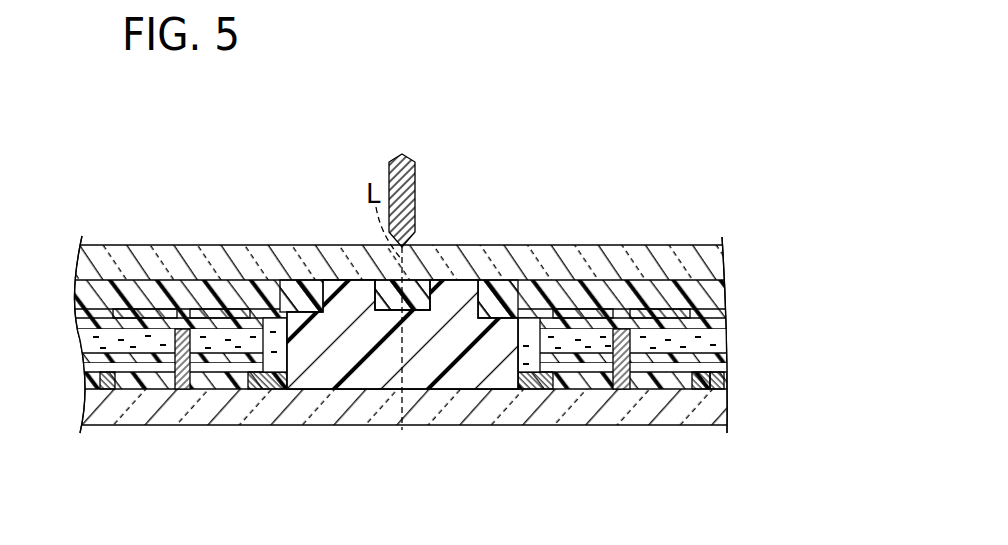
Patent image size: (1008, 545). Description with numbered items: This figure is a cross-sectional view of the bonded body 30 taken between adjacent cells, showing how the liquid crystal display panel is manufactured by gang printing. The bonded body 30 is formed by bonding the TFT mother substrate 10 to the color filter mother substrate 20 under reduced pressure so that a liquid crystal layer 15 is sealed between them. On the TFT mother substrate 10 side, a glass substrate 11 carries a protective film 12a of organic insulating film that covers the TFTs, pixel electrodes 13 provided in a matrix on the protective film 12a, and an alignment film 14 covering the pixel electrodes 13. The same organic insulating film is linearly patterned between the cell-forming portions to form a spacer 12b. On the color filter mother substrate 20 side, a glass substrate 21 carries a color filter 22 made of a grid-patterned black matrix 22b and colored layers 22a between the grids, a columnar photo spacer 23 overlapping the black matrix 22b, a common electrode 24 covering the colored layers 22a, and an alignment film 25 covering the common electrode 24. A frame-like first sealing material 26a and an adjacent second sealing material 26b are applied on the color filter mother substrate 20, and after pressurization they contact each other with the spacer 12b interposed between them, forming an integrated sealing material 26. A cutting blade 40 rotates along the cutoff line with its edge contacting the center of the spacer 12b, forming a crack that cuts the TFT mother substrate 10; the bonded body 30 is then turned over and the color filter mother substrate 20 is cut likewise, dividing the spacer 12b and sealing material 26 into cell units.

The bonded body 30 is at (108, 207).
The cutting blade 40 is at (415, 182).
The TFT mother substrate 10 is at (470, 273).
The glass substrate 11 is at (720, 260).
The protective film 12a is at (716, 292).
The spacer 12b is at (412, 286).
The pixel electrodes 13 is at (718, 314).
The alignment film 14 is at (437, 317).
The liquid crystal layer 15 is at (724, 338).
The color filter mother substrate 20 is at (482, 434).
The glass substrate 21 is at (671, 419).
The color filter 22 is at (478, 424).
The colored layers 22a is at (728, 389).
The black matrix 22b is at (698, 392).
The photo spacer 23 is at (631, 372).
The common electrode 24 is at (733, 370).
The alignment film 25 is at (731, 358).
The sealing material 26 is at (402, 402).
The first sealing material 26a is at (437, 380).
The second sealing material 26b is at (361, 380).